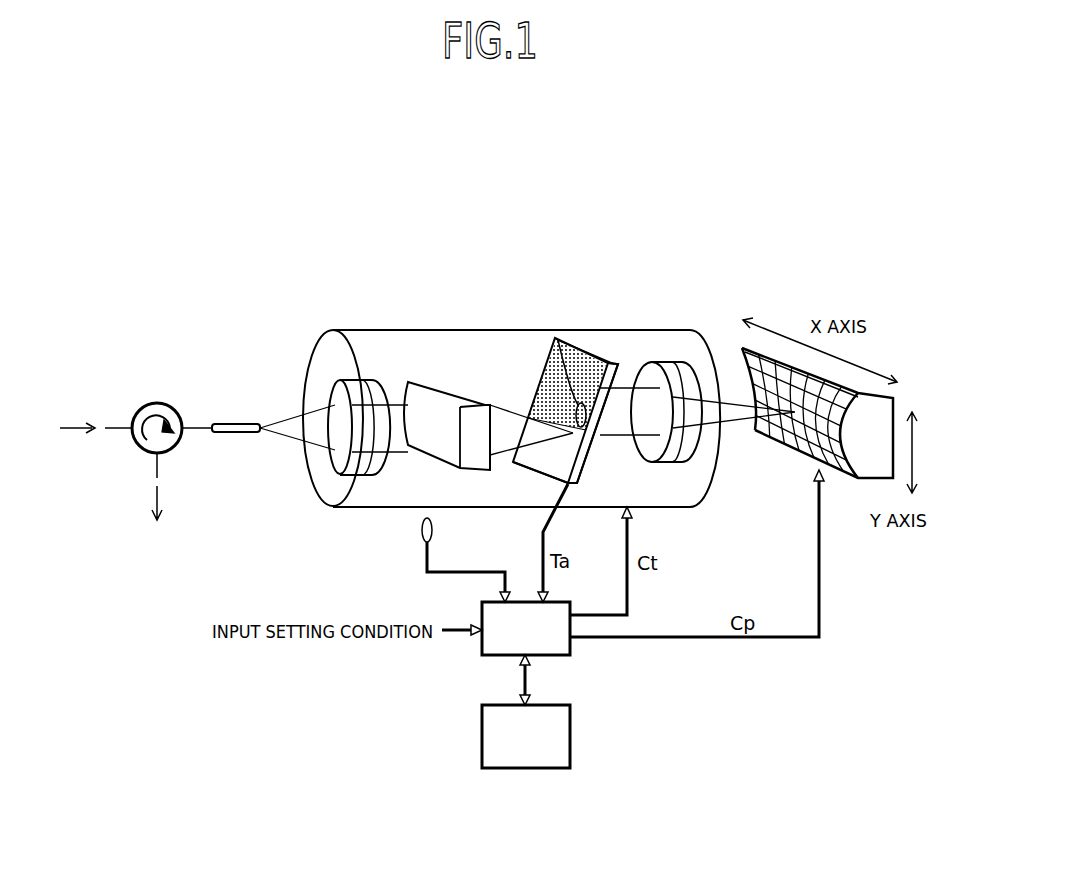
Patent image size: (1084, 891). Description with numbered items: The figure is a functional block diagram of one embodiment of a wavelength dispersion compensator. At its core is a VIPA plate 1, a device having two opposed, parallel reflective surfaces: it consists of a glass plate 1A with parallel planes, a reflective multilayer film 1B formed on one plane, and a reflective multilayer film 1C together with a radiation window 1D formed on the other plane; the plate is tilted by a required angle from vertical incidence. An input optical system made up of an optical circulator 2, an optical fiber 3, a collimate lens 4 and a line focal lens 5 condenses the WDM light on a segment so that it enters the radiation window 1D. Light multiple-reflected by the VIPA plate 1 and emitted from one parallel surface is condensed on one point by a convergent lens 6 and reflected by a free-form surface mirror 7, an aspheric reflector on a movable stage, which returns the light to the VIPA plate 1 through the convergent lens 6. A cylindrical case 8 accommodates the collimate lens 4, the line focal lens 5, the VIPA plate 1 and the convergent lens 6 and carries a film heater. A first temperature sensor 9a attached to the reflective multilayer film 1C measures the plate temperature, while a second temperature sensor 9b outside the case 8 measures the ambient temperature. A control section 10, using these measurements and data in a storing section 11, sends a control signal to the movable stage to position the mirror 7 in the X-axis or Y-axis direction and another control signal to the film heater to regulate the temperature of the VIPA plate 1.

The VIPA plate 1 is at (564, 419).
The glass plate 1A is at (574, 486).
The reflective multilayer film 1B is at (588, 462).
The reflective multilayer film 1C is at (540, 363).
The radiation window 1D is at (547, 450).
The optical circulator 2 is at (157, 403).
The optical fiber 3 is at (233, 424).
The collimate lens 4 is at (350, 377).
The line focal lens 5 is at (423, 382).
The convergent lens 6 is at (663, 360).
The free-form surface mirror 7 is at (802, 457).
The case 8 is at (687, 507).
The first temperature sensor 9a is at (558, 338).
The second temperature sensor 9b is at (420, 530).
The control section 10 is at (482, 640).
The storing section 11 is at (570, 735).